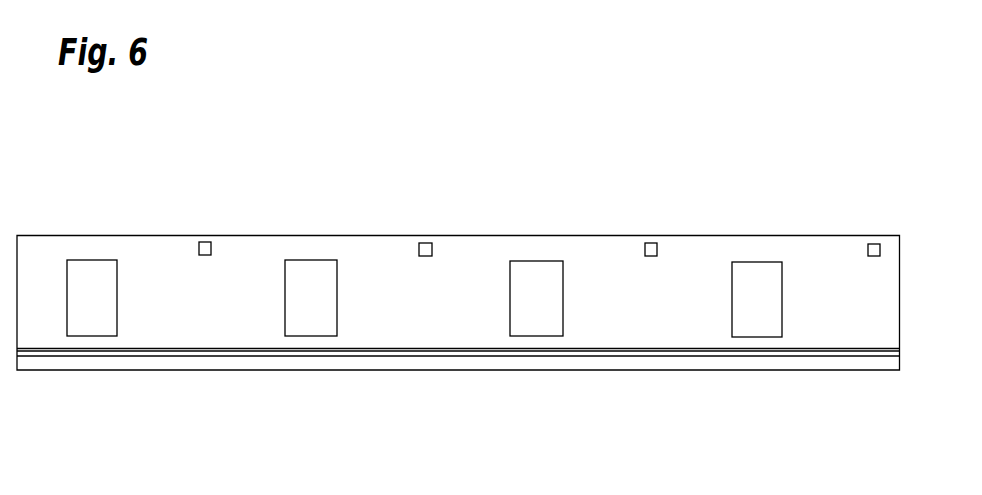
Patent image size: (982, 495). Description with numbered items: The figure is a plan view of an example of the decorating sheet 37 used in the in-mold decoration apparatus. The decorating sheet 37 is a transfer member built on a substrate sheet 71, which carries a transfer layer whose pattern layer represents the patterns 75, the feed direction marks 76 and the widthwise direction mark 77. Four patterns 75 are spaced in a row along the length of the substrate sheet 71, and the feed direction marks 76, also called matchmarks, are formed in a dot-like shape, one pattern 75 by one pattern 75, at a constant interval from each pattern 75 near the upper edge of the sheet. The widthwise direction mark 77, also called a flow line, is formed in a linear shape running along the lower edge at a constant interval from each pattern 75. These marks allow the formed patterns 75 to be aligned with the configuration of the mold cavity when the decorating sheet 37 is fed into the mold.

The decorating sheet 37 is at (725, 197).
The substrate sheet 71 is at (105, 240).
The patterns 75 is at (110, 330).
The feed direction marks 76 is at (212, 242).
The widthwise direction mark 77 is at (815, 358).